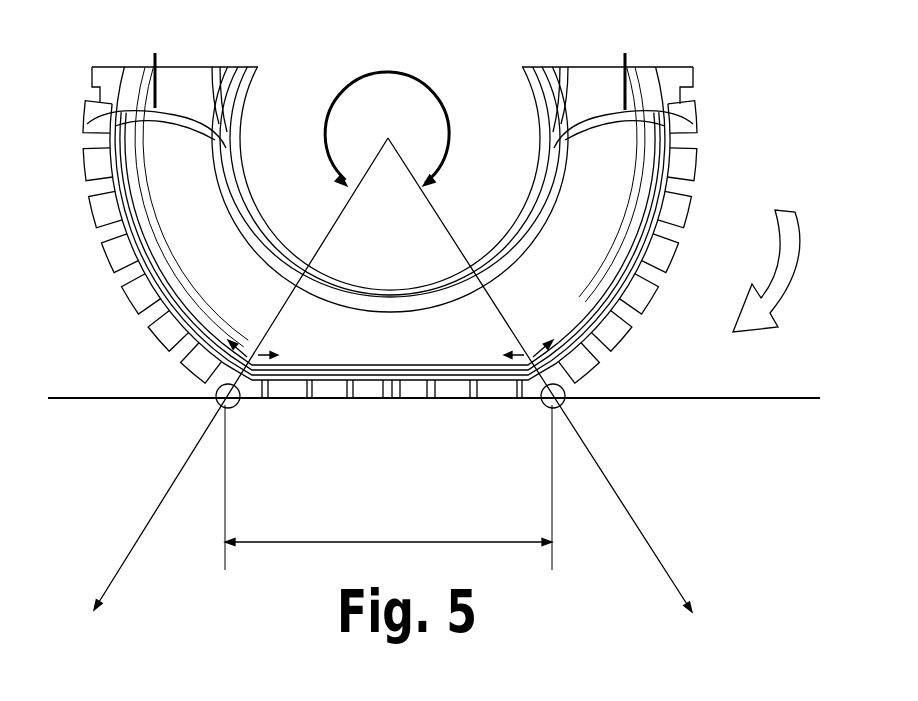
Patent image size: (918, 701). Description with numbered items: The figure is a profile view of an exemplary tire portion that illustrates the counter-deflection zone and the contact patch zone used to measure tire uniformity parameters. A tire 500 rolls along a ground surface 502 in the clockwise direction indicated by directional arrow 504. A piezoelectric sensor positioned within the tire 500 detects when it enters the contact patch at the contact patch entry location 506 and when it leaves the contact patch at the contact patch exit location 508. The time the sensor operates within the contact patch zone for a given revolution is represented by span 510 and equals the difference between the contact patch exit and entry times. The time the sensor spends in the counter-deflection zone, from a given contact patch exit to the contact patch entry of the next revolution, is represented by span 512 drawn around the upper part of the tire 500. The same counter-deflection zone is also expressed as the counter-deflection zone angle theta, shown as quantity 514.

The tire 500 is at (698, 165).
The ground surface 502 is at (775, 395).
The directional arrow 504 is at (794, 208).
The contact patch entry location 506 is at (580, 389).
The contact patch exit location 508 is at (203, 389).
The contact patch zone span 510 is at (403, 540).
The counter-deflection zone span 512 is at (356, 78).
The counter-deflection zone angle 514 is at (433, 115).